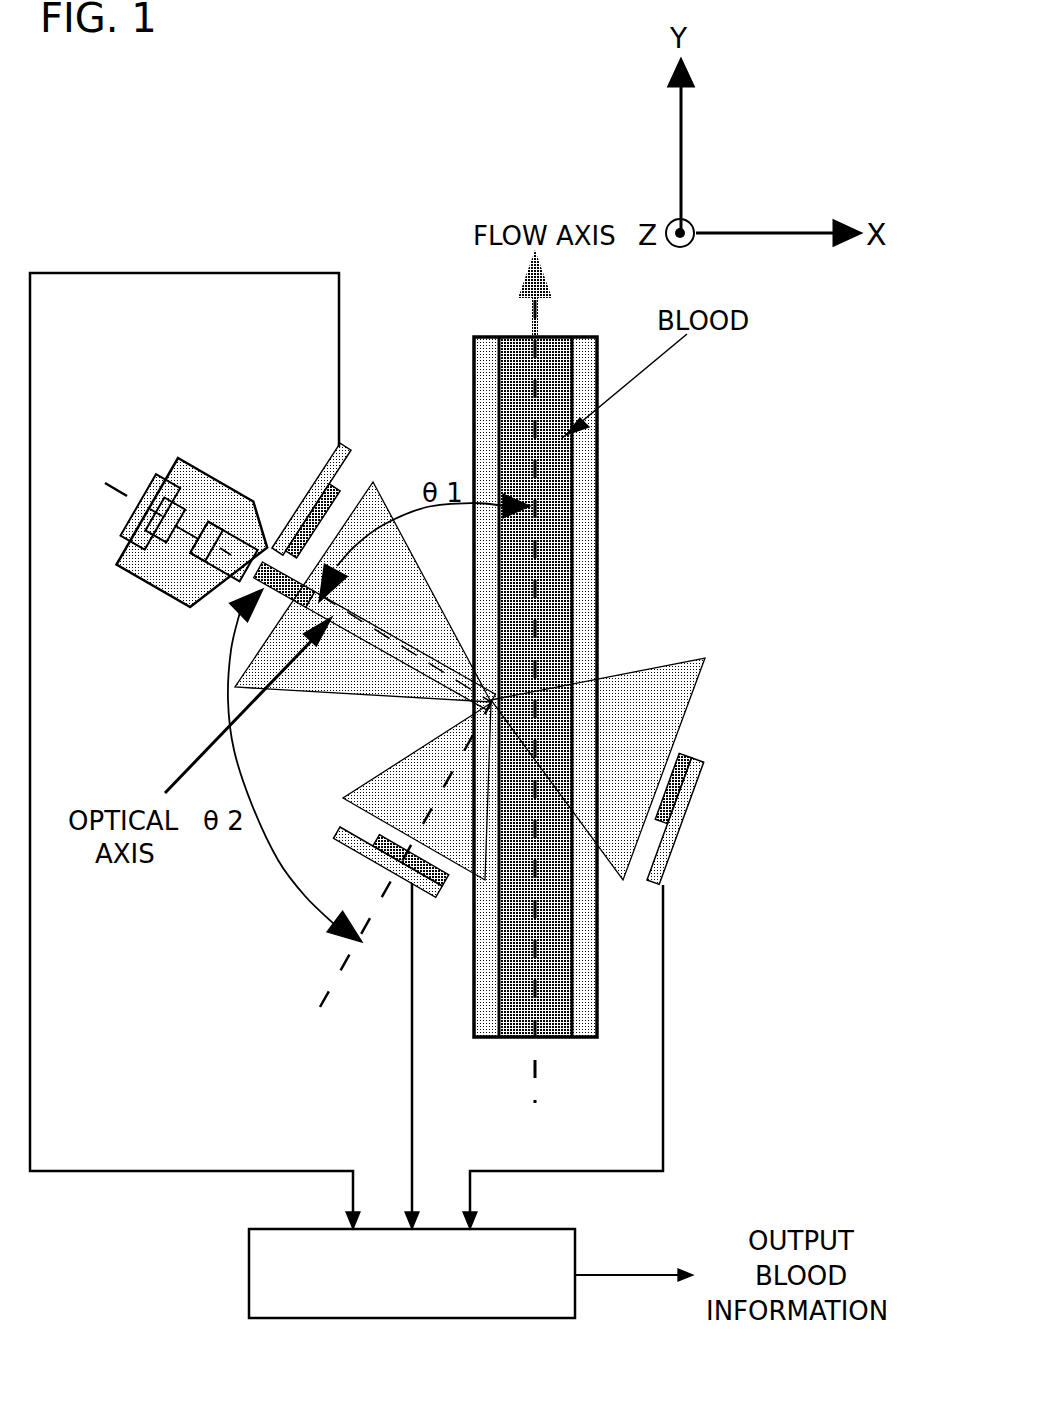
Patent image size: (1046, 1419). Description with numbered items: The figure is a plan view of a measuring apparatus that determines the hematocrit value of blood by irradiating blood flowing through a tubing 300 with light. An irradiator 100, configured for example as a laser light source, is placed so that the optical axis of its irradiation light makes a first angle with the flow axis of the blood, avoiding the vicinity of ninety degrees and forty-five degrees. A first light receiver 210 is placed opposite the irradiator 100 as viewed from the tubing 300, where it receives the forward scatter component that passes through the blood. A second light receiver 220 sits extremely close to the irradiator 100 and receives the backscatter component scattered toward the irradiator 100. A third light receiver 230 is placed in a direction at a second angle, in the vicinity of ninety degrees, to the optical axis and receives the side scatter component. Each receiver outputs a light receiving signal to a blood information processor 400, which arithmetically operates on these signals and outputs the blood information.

The irradiator 100 is at (223, 482).
The first light receiver 210 is at (668, 822).
The second light receiver 220 is at (297, 507).
The third light receiver 230 is at (388, 868).
The tubing 300 is at (600, 555).
The blood information processor 400 is at (280, 1230).